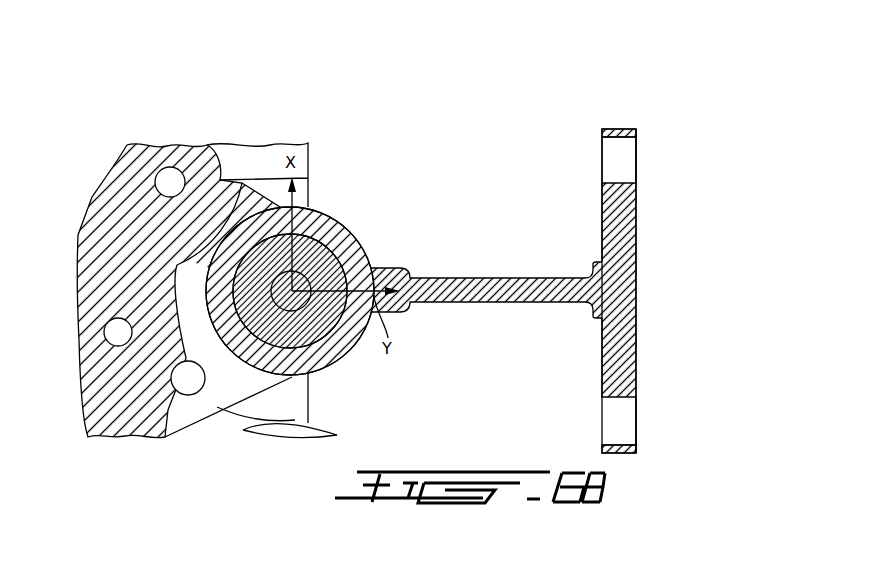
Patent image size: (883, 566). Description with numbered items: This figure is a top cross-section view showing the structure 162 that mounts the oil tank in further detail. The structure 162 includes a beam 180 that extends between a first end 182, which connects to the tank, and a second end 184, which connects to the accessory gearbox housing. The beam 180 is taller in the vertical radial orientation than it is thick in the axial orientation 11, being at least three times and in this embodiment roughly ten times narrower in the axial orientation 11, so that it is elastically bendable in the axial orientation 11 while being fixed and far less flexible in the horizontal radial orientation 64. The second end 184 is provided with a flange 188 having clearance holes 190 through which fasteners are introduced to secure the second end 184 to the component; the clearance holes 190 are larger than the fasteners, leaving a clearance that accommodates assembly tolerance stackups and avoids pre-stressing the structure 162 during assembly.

The axial orientation 11 is at (278, 203).
The first end 182 is at (328, 210).
The horizontal radial orientation 64 is at (370, 288).
The beam 180 is at (497, 262).
The second end 184 is at (607, 213).
The flange 188 is at (620, 155).
The structure 162 is at (611, 256).
The clearance holes 190 is at (641, 173).